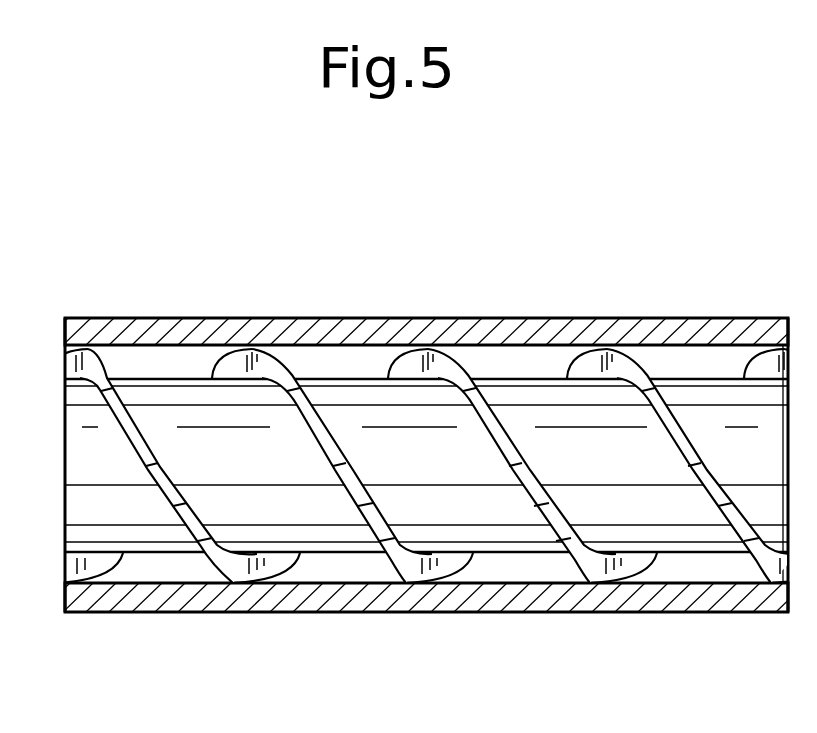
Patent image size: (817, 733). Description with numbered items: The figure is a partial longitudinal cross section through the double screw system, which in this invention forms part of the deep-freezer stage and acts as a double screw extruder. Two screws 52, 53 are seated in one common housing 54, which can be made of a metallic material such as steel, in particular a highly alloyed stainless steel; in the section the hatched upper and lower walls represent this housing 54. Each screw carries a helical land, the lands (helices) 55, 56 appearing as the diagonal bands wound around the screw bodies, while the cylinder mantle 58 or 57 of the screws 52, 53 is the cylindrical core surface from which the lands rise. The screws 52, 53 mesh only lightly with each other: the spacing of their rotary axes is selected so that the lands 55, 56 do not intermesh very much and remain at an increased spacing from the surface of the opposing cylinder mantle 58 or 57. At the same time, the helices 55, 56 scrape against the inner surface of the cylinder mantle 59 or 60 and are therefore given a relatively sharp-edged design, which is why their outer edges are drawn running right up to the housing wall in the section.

The screw 52 is at (426, 532).
The screw 53 is at (637, 517).
The housing 54 is at (502, 336).
The land (helix) 55 is at (436, 634).
The land (helix) 56 is at (255, 557).
The cylinder mantle 57 is at (448, 414).
The cylinder mantle 58 is at (176, 368).
The inner surface of cylinder mantle 59 is at (416, 300).
The inner surface of cylinder mantle 60 is at (317, 362).